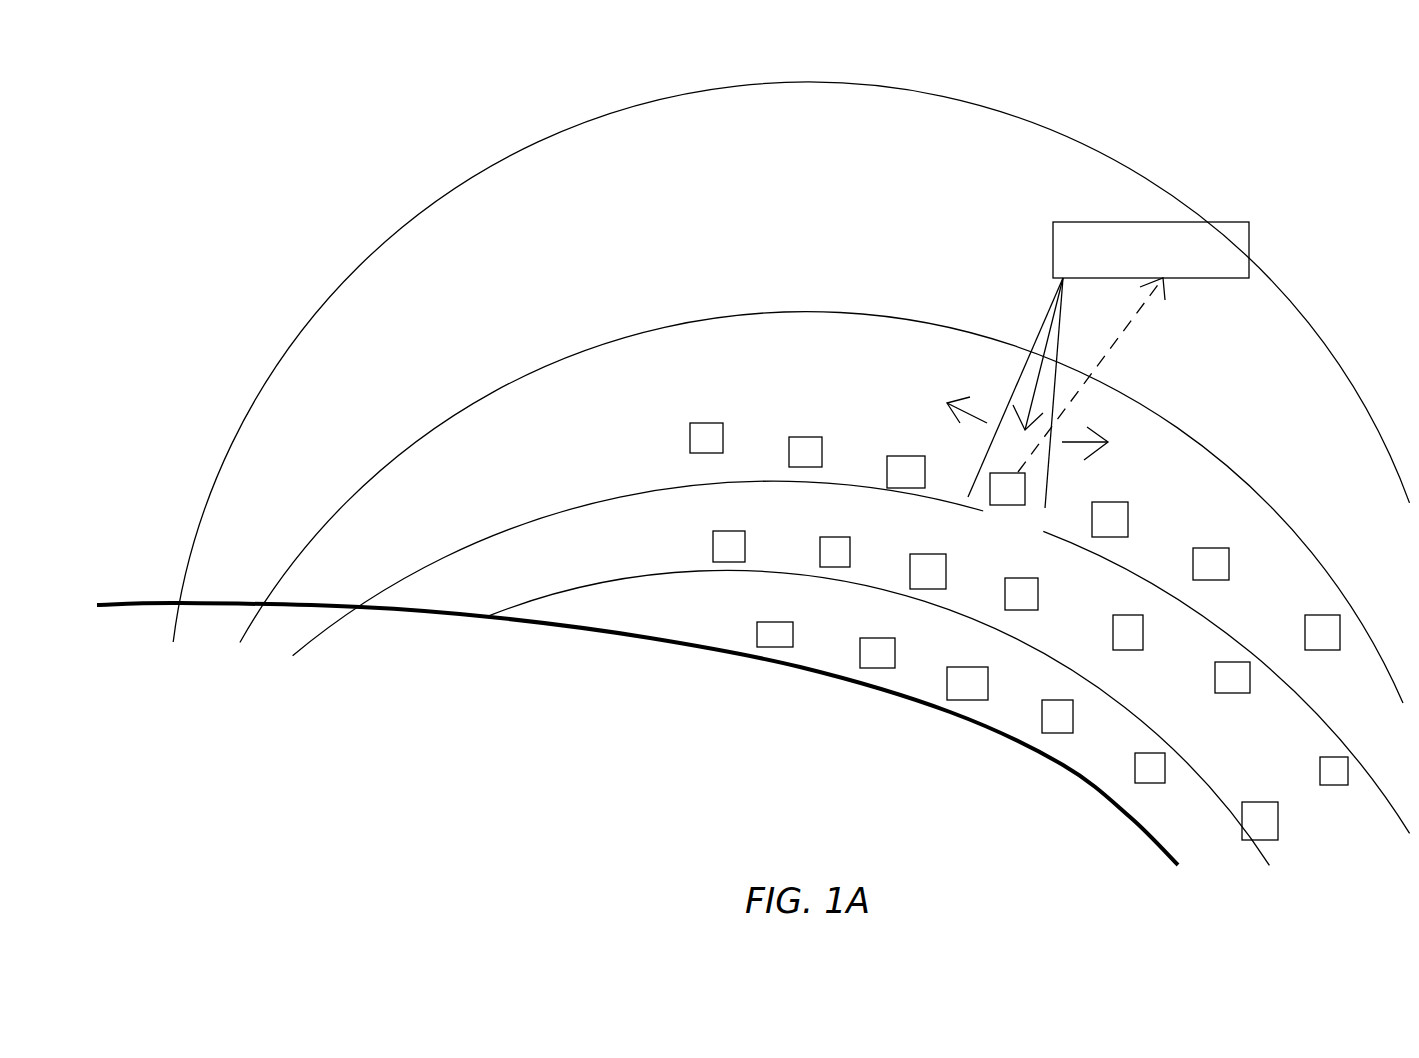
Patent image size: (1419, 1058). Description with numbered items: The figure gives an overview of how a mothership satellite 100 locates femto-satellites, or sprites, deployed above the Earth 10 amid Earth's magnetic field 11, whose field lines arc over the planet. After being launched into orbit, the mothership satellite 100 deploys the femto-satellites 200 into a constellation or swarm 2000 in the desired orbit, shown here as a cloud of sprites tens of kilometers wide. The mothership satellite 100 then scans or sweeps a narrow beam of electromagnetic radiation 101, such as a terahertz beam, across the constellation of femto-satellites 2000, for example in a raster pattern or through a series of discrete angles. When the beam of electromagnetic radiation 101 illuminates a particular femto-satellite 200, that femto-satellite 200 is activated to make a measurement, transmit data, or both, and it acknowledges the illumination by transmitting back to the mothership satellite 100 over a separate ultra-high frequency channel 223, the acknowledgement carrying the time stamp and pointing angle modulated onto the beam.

The Earth's magnetic field 11 is at (791, 473).
The Earth 10 is at (664, 740).
The mothership satellite 100 is at (1118, 266).
The beam of electromagnetic radiation 101 is at (1014, 368).
The ultra-high frequency (UHF) channel 223 is at (1154, 375).
The constellation of femto-satellites 2000 is at (980, 598).
The femto-satellite 200 is at (1006, 511).